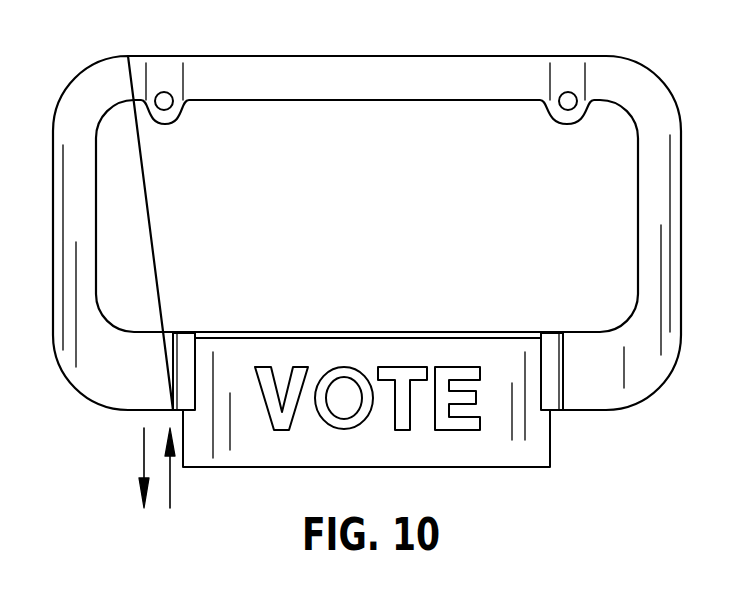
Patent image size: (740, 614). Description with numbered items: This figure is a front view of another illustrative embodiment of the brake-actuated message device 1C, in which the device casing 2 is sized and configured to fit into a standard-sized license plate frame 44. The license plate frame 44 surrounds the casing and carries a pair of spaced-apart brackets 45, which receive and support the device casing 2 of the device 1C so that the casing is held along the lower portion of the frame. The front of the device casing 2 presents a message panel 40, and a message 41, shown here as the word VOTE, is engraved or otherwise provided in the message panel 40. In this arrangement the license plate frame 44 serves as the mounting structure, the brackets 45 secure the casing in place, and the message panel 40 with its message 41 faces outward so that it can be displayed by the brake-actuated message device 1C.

The brake-actuated message device 1C is at (367, 270).
The device casing 2 is at (365, 408).
The message panel 40 is at (247, 440).
The message 41 is at (462, 360).
The license plate frame 44 is at (513, 56).
The brackets 45 is at (187, 333).